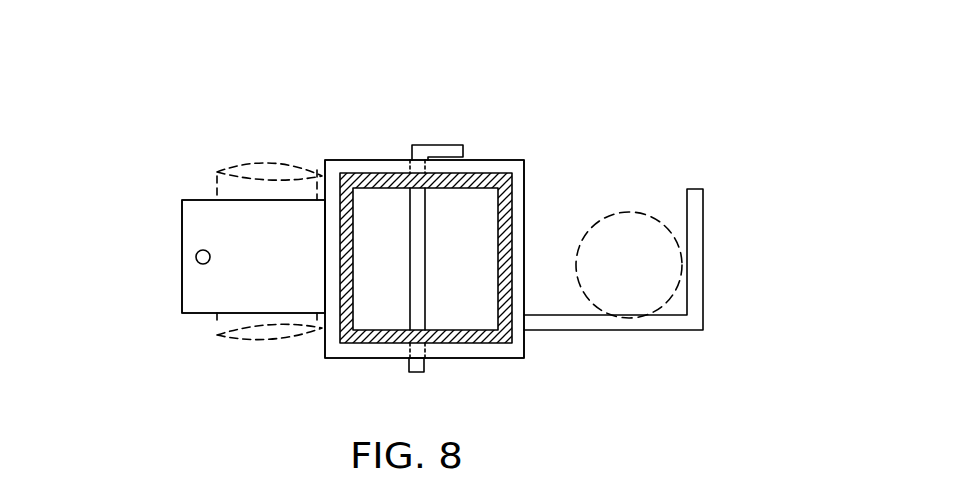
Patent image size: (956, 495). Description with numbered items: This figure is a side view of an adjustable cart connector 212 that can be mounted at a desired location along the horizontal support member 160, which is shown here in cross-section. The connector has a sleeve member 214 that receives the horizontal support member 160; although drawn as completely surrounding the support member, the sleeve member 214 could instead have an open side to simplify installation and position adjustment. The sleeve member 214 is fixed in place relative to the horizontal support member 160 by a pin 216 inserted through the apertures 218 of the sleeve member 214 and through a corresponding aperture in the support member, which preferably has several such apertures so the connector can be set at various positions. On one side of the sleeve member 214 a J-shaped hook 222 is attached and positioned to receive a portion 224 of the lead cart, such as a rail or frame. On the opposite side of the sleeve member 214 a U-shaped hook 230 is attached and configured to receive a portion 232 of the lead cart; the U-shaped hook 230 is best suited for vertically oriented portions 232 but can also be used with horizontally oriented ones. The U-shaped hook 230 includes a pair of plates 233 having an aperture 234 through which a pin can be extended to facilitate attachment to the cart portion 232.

The adjustable cart connector 212 is at (533, 115).
The sleeve member 214 is at (350, 160).
The horizontal support member 160 is at (509, 222).
The pin 216 is at (430, 145).
The apertures of the sleeve member 218 is at (407, 159).
The J-shaped hook 222 is at (703, 293).
The portion of the lead cart 224 is at (640, 215).
The U-shaped hook 230 is at (173, 288).
The portion of the lead cart 232 is at (218, 172).
The plates 233 is at (193, 220).
The aperture 234 is at (196, 256).